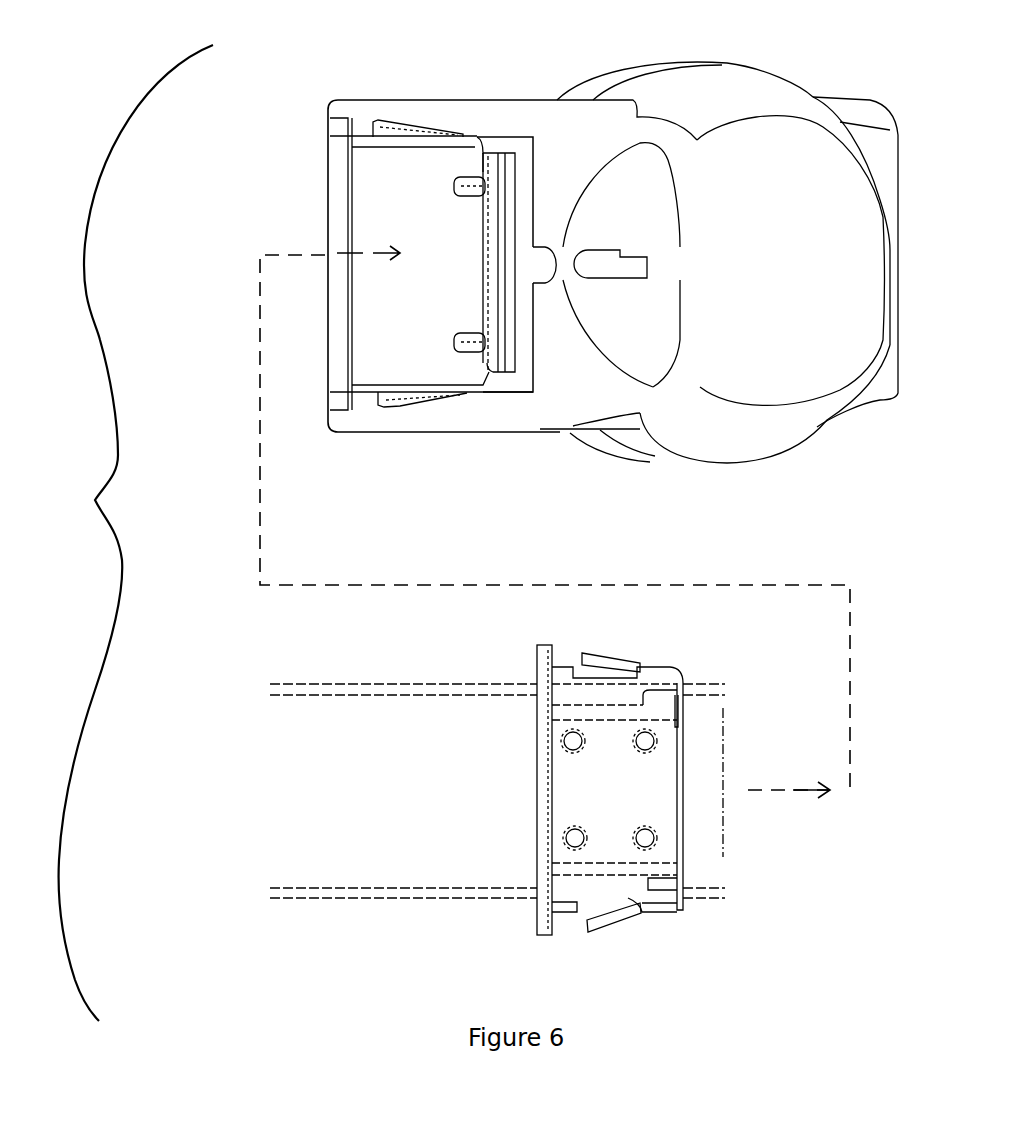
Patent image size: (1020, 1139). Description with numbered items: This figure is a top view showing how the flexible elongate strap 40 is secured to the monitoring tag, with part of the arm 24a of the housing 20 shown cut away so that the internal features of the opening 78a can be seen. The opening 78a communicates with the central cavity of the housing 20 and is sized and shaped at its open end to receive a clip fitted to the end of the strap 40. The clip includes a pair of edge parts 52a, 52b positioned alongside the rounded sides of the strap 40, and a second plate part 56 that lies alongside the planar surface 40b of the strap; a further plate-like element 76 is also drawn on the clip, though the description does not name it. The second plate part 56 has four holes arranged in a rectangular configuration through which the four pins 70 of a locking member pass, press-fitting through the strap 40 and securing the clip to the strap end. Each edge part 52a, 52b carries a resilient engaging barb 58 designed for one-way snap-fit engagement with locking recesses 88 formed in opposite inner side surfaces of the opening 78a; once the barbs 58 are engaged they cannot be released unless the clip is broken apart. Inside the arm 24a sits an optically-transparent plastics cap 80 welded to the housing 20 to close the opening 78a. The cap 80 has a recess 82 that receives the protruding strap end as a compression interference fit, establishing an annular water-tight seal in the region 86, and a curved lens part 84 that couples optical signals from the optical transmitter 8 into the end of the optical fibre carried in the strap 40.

The optical transmitter 8 is at (607, 260).
The housing 20 is at (762, 430).
The arm 24a is at (427, 417).
The strap 40 is at (707, 840).
The planar surface 40b is at (417, 863).
The edge part 52a is at (643, 890).
The edge part 52b is at (633, 692).
The second plate part 56 is at (607, 840).
The resilient engaging barb 58 is at (607, 657).
The pins 70 is at (650, 833).
The plate 76 is at (547, 908).
The opening 78a is at (390, 293).
The optically-transparent plastics cap 80 is at (513, 388).
The recess 82 is at (500, 350).
The curved lens part 84 is at (542, 267).
The seal region 86 is at (492, 167).
The locking recesses 88 is at (392, 127).